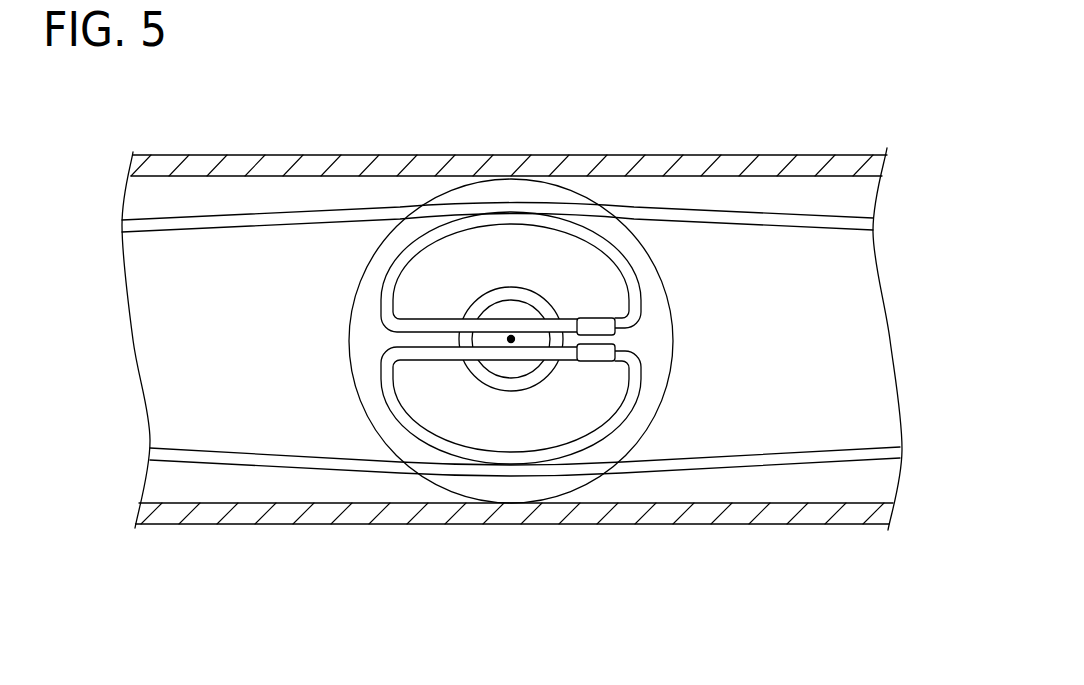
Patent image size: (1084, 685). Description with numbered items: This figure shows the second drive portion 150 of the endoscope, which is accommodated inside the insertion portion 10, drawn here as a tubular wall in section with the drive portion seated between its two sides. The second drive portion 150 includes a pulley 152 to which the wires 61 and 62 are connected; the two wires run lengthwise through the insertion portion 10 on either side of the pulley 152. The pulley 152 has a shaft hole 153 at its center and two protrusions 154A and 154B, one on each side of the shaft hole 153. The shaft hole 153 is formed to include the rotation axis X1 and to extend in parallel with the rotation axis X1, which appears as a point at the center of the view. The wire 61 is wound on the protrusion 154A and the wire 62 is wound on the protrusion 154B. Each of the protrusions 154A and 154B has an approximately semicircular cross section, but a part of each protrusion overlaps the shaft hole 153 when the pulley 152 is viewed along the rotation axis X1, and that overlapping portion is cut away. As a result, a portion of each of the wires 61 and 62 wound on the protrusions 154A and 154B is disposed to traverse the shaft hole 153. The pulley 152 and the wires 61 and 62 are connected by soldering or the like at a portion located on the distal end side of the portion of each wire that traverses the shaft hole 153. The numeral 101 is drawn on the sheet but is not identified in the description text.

The insertion portion 10 is at (791, 165).
The wire 61 is at (223, 218).
The wire 62 is at (205, 457).
The sensor unit 101 is at (535, 305).
The second drive portion 150 is at (508, 344).
The pulley 152 is at (648, 340).
The shaft hole 153 is at (507, 377).
The protrusion 154A is at (510, 240).
The protrusion 154B is at (517, 435).
The rotation axis X1 is at (511, 340).